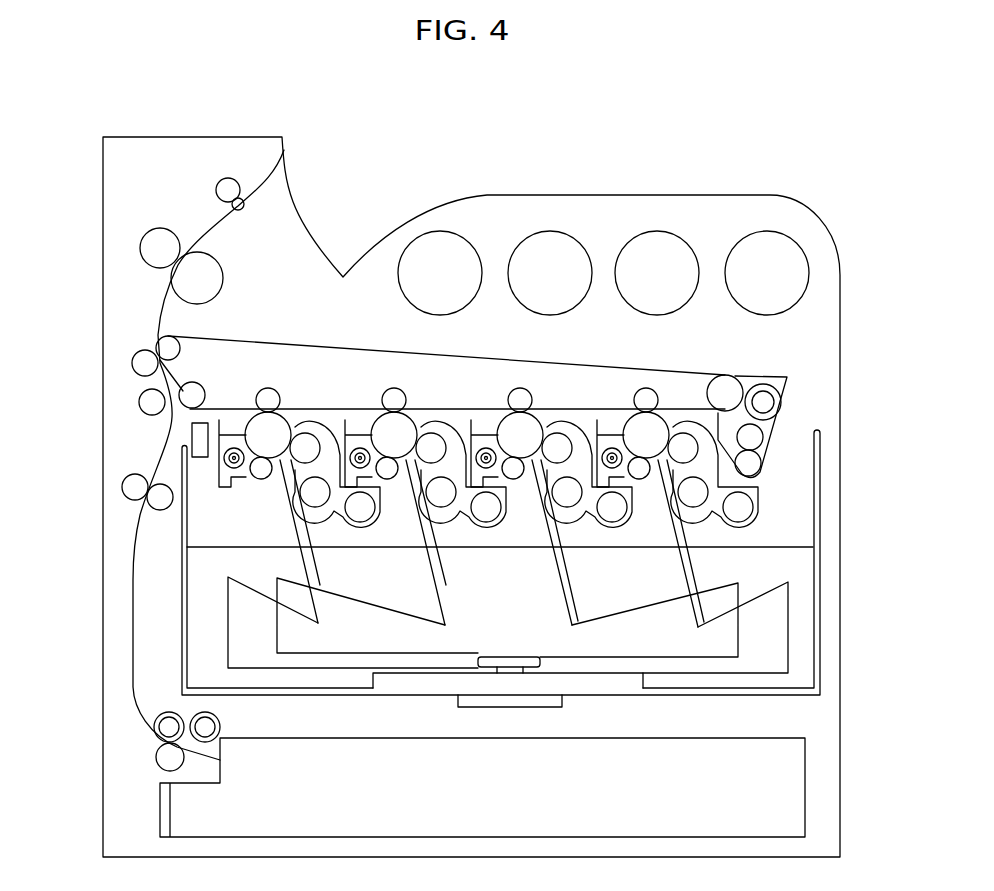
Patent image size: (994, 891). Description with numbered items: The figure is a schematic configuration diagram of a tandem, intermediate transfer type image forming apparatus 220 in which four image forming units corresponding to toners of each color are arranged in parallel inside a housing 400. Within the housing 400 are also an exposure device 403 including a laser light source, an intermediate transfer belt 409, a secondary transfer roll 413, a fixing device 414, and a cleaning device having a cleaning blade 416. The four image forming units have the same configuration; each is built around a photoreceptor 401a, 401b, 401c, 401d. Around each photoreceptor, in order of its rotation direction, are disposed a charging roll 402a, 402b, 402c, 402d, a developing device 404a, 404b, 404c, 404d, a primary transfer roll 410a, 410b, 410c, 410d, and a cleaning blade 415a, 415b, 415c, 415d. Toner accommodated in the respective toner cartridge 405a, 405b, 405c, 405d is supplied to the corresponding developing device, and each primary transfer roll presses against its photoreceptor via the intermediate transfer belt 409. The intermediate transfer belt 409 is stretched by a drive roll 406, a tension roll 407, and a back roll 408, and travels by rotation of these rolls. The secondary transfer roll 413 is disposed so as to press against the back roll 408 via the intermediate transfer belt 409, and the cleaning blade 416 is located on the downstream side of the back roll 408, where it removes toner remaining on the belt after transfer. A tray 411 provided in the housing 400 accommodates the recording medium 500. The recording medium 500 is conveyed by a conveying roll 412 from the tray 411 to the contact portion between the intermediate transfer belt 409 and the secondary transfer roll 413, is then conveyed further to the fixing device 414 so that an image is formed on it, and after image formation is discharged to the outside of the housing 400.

The image forming apparatus 220 is at (846, 172).
The housing 400 is at (842, 282).
The photoreceptor 401a is at (660, 425).
The photoreceptor 401b is at (536, 418).
The photoreceptor 401c is at (400, 420).
The photoreceptor 401d is at (278, 428).
The charging roll 402a is at (643, 480).
The charging roll 402b is at (514, 480).
The charging roll 402c is at (387, 480).
The charging roll 402d is at (260, 480).
The exposure device 403 is at (542, 667).
The developing device 404a is at (693, 517).
The developing device 404b is at (567, 517).
The developing device 404c is at (441, 517).
The developing device 404d is at (320, 517).
The toner cartridge 405a is at (775, 252).
The toner cartridge 405b is at (661, 252).
The toner cartridge 405c is at (553, 250).
The toner cartridge 405d is at (432, 250).
The drive roll 406 is at (780, 377).
The tension roll 407 is at (139, 402).
The back roll 408 is at (157, 345).
The intermediate transfer belt 409 is at (217, 333).
The primary transfer roll 410a is at (653, 380).
The primary transfer roll 410b is at (520, 388).
The primary transfer roll 410c is at (393, 388).
The primary transfer roll 410d is at (268, 388).
The tray 411 is at (793, 740).
The conveying roll 412 is at (232, 205).
The secondary transfer roll 413 is at (132, 362).
The fixing device 414 is at (140, 248).
The cleaning blade 415a is at (611, 447).
The cleaning blade 415b is at (485, 447).
The cleaning blade 415c is at (358, 447).
The cleaning blade 415d is at (233, 447).
The cleaning blade 416 is at (740, 427).
The recording medium 500 is at (133, 600).